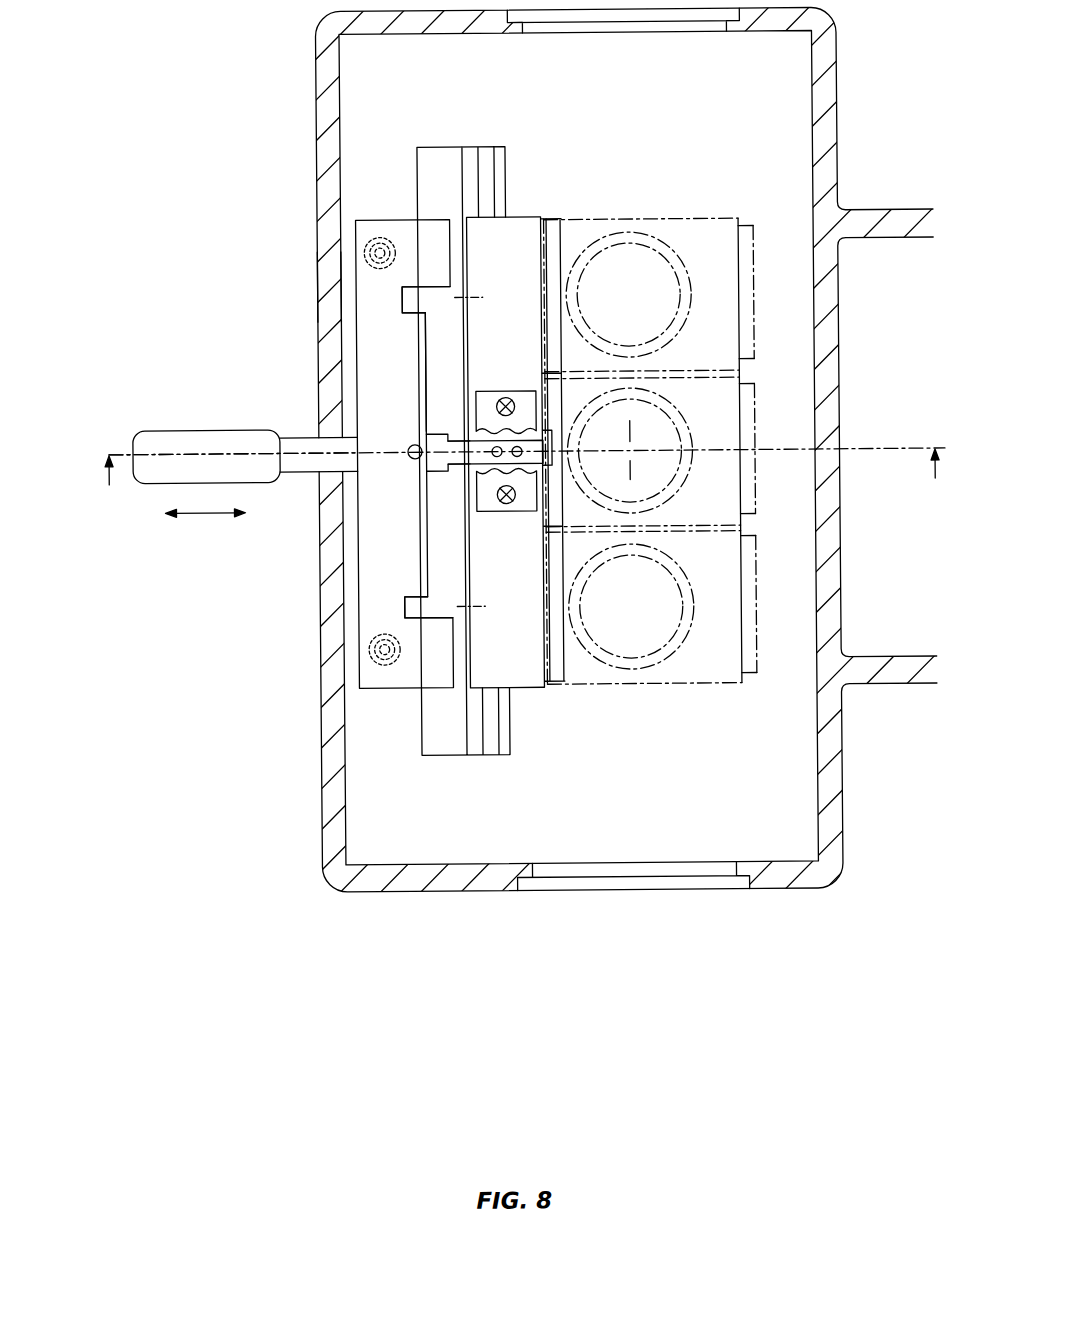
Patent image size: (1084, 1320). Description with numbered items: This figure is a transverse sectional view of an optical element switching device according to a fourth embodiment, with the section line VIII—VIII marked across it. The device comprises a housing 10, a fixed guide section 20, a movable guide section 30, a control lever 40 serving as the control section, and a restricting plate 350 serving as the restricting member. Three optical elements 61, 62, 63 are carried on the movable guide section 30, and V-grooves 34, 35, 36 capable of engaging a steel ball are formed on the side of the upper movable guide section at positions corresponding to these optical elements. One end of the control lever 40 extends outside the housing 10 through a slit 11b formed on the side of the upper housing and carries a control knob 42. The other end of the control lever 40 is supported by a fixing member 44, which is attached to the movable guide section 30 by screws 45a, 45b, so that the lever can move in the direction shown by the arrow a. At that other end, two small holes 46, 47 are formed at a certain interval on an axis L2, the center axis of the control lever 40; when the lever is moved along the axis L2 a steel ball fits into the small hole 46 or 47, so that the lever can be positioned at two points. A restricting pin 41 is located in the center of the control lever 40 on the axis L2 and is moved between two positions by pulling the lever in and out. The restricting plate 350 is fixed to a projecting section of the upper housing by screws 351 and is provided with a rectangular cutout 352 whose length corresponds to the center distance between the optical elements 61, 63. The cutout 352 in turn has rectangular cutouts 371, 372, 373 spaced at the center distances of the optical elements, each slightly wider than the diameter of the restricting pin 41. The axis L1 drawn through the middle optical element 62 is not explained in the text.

The housing 10 is at (842, 126).
The slit 11b is at (333, 286).
The fixed guide section 20 is at (447, 756).
The movable guide section 30 is at (527, 673).
The V-groove 34 is at (482, 606).
The V-groove 35 is at (472, 471).
The V-groove 36 is at (469, 297).
The control lever 40 is at (303, 467).
The restricting pin 41 is at (436, 450).
The control knob 42 is at (188, 442).
The fixing member 44 is at (485, 398).
The screw 45a is at (511, 507).
The screw 45b is at (502, 398).
The small hole 46 is at (494, 451).
The small hole 47 is at (523, 452).
The optical element 61 is at (733, 646).
The optical element 62 is at (733, 498).
The optical element 63 is at (728, 321).
The restricting plate 350 is at (402, 673).
The screw 351 is at (368, 243).
The rectangular cutout 352 is at (427, 326).
The rectangular cutout 371 is at (405, 603).
The rectangular cutout 372 is at (424, 471).
The rectangular cutout 373 is at (401, 298).
The cartridge axis L1 is at (632, 449).
The axis L2 is at (300, 446).
The arrow a is at (199, 512).
The line VIII— VIII is at (520, 487).